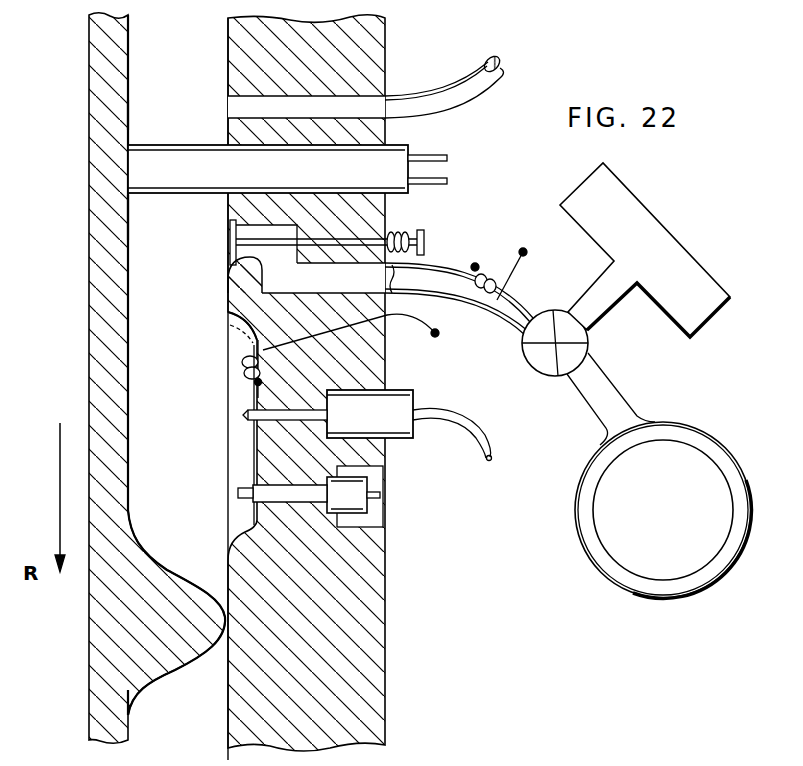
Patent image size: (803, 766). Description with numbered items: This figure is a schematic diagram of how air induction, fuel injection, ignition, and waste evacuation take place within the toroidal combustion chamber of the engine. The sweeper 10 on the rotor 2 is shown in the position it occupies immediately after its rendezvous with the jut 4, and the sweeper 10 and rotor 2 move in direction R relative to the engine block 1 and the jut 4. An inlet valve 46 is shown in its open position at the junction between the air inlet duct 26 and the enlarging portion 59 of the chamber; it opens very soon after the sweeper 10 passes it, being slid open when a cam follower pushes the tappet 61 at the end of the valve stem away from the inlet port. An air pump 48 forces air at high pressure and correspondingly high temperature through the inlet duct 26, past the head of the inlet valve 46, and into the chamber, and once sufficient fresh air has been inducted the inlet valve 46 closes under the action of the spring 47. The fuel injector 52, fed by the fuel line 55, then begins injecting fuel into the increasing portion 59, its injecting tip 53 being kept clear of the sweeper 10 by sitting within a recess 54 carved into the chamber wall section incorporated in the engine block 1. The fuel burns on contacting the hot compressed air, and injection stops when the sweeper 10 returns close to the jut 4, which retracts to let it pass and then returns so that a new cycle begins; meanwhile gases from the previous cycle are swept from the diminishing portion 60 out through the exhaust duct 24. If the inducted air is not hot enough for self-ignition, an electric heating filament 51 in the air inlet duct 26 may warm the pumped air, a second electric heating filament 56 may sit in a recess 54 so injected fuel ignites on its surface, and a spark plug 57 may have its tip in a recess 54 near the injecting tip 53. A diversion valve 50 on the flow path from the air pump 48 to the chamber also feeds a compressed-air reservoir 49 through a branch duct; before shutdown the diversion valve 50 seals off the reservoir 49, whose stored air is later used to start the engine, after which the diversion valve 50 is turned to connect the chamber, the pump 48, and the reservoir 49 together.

The engine block 1 is at (378, 620).
The rotor 2 is at (100, 250).
The jut 4 is at (207, 150).
The sweeper 10 is at (185, 629).
The exhaust duct 24 is at (418, 95).
The air inlet duct 26 is at (453, 300).
The inlet valve 46 is at (227, 245).
The spring 47 is at (395, 235).
The air pump 48 is at (602, 475).
The compressed-air reservoir 49 is at (676, 249).
The diversion valve 50 is at (563, 318).
The electric heating filament 51 is at (498, 308).
The fuel injector 52 is at (370, 414).
The injecting tip 53 is at (245, 413).
The recess 54 is at (254, 455).
The fuel line 55 is at (458, 423).
The electric heating filament 56 is at (243, 365).
The spark plug 57 is at (240, 495).
The enlarging portion of the toroidal chamber 59 is at (142, 218).
The diminishing portion of the toroidal chamber 60 is at (143, 123).
The tappet 61 is at (427, 240).